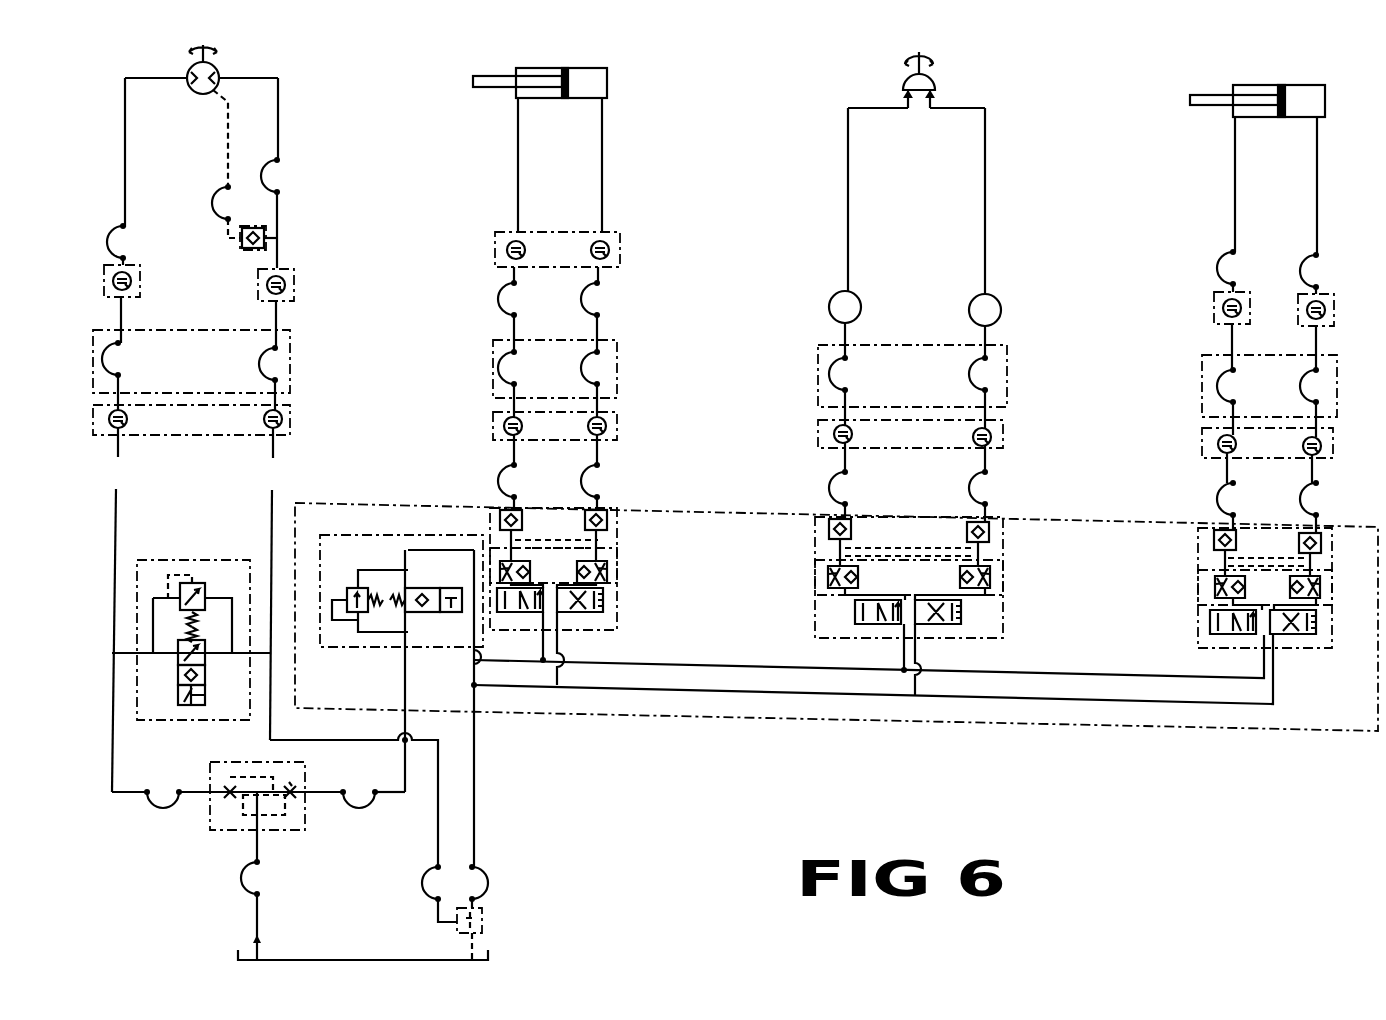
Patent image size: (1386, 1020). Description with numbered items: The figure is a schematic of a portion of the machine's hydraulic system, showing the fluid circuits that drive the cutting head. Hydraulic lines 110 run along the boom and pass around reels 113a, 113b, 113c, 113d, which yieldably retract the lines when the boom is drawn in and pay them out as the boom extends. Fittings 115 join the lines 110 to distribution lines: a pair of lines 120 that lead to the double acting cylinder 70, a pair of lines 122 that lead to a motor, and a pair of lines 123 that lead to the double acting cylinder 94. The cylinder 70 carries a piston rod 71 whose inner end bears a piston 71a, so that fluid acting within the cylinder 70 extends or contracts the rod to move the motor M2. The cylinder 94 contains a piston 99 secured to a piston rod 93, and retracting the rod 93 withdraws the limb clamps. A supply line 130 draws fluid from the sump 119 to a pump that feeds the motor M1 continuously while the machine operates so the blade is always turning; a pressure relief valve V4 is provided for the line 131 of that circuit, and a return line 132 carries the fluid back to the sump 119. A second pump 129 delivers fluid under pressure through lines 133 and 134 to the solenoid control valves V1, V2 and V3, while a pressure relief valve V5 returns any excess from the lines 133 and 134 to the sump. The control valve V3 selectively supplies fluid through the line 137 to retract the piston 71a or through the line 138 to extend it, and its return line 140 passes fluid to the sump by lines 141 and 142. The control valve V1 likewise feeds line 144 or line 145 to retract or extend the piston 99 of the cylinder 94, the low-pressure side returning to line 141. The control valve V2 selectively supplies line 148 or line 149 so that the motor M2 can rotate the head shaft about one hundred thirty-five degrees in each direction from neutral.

The motor M1 is at (218, 73).
The motor M2 is at (938, 87).
The double acting hydraulic cylinder 70 is at (1306, 88).
The piston rod 71 is at (1215, 93).
The piston 71a is at (1283, 117).
The piston rod 93 is at (495, 75).
The hydraulic double acting cylinder 94 is at (602, 70).
The piston 99 is at (563, 68).
The hydraulic lines 110 is at (112, 376).
The reel 113a is at (290, 430).
The reel 113b is at (617, 440).
The reel 113c is at (1004, 443).
The reel 113d is at (1334, 453).
The fittings 115 is at (258, 287).
The sump 119 is at (488, 960).
The lines 120 is at (1302, 259).
The lines 122 is at (848, 234).
The lines 123 is at (602, 148).
The pump 129 is at (209, 833).
The supply line 130 is at (258, 917).
The line 131 is at (118, 522).
The return line 132 is at (267, 523).
The line 133 is at (403, 762).
The line 134 is at (638, 662).
The line 137 is at (1218, 507).
The line 138 is at (1298, 509).
The return line 140 is at (1276, 702).
The line 141 is at (741, 694).
The line 142 is at (475, 820).
The line 144 is at (498, 488).
The line 145 is at (586, 488).
The line 148 is at (838, 500).
The line 149 is at (975, 503).
The control valve V1 is at (618, 579).
The control valve V2 is at (815, 600).
The control valve V3 is at (1198, 616).
The pressure relief valve V4 is at (193, 561).
The pressure relief valve V5 is at (416, 598).